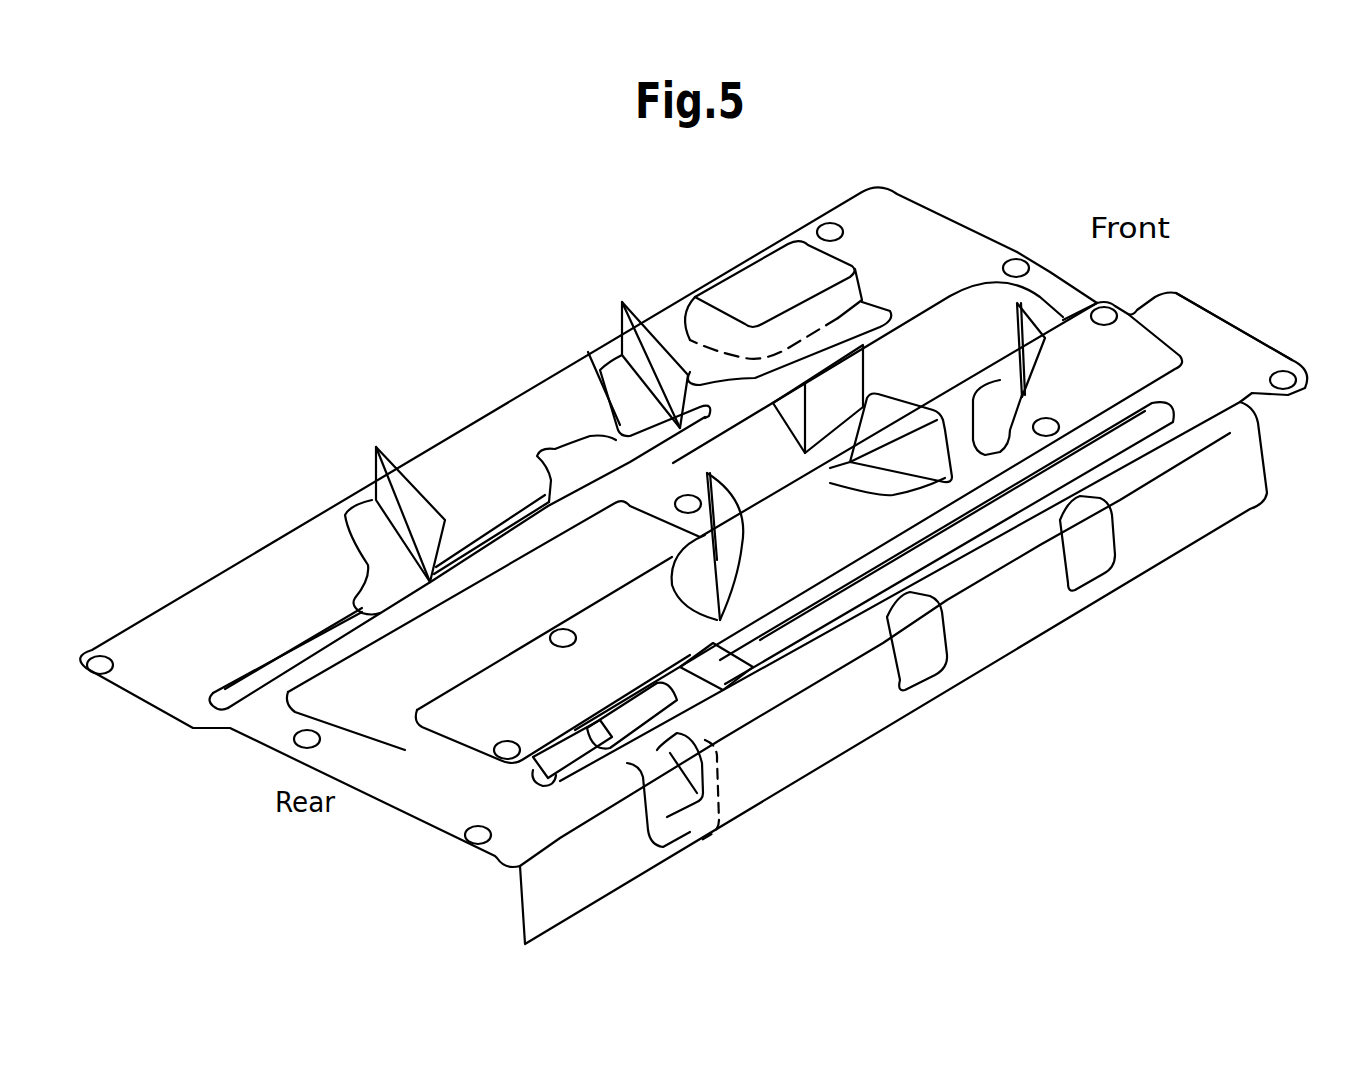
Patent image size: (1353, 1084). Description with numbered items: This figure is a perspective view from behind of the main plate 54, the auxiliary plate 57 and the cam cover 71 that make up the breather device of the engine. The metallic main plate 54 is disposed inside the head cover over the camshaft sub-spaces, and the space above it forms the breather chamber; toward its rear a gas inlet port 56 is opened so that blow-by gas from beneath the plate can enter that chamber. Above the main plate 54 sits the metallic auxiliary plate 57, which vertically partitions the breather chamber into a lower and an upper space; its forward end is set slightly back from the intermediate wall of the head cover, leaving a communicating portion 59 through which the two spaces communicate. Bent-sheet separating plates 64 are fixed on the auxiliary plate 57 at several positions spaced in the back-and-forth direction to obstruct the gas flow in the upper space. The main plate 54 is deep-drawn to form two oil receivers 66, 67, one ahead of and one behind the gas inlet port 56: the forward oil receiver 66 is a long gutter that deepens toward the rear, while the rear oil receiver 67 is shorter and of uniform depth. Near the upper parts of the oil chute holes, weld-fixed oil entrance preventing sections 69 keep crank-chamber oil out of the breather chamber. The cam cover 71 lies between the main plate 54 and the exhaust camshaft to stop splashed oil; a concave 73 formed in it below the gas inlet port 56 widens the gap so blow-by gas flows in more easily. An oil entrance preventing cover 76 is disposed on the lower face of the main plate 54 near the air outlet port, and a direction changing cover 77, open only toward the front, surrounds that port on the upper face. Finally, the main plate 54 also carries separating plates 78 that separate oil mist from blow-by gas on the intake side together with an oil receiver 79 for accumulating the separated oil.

The main plate 54 is at (1073, 291).
The gas inlet port 56 is at (652, 694).
The auxiliary plate 57 is at (1150, 345).
The communicating portion 59 is at (1218, 335).
The separating plates 64 is at (905, 410).
The oil receiver 66 is at (845, 585).
The oil receiver 67 is at (540, 776).
The oil entrance preventing section 69 is at (737, 677).
The cam cover 71 is at (524, 893).
The concave 73 is at (687, 808).
The oil entrance preventing cover 76 is at (795, 425).
The direction changing cover 77 is at (822, 262).
The separating plates 78 is at (378, 470).
The oil receiver 79 is at (568, 446).